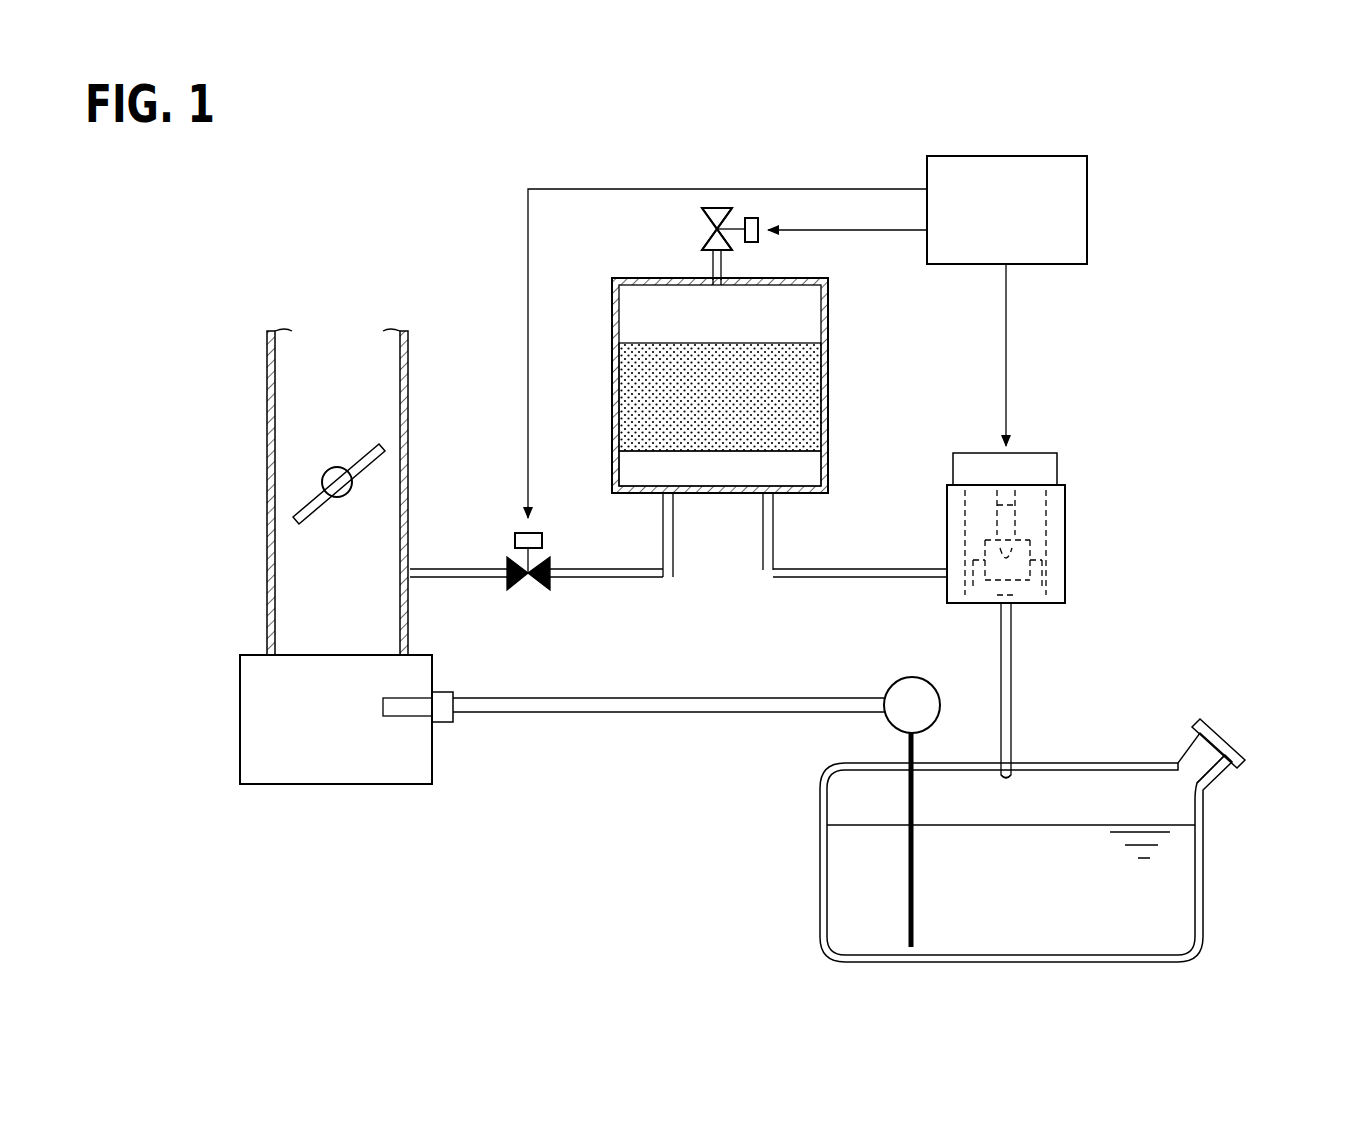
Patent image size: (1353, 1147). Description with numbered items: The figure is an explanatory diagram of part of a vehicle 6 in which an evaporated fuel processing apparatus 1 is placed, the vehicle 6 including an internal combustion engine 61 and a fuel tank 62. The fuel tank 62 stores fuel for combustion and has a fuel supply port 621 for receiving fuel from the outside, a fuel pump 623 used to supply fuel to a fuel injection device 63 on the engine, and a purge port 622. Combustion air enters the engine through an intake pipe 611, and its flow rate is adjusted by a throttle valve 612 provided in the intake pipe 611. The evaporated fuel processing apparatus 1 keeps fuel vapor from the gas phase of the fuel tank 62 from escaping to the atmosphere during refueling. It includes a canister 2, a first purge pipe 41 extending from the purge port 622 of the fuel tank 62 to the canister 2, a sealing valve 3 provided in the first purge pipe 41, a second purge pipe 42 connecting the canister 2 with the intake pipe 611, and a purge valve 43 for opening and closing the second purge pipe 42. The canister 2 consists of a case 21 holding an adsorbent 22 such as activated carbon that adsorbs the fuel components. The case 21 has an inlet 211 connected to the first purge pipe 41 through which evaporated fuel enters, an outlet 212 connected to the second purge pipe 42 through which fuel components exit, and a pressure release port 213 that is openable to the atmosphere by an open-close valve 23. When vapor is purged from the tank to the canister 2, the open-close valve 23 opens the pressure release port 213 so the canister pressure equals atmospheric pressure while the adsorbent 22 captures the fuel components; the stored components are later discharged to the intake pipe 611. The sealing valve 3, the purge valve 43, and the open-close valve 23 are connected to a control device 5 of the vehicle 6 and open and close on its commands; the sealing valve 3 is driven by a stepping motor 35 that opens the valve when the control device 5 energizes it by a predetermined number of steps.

The evaporated fuel processing apparatus 1 is at (1100, 365).
The canister 2 is at (738, 401).
The case 21 is at (832, 465).
The adsorbent 22 is at (790, 385).
The open-close valve 23 is at (718, 205).
The inlet 211 is at (785, 480).
The outlet 212 is at (660, 480).
The pressure release port 213 is at (653, 263).
The sealing valve 3 is at (1050, 525).
The stepping motor 35 is at (1030, 468).
The first purge pipe 41 is at (1010, 657).
The second purge pipe 42 is at (600, 580).
The purge valve 43 is at (541, 590).
The control device 5 is at (1063, 213).
The vehicle 6 is at (598, 818).
The internal combustion engine 61 is at (340, 750).
The intake pipe 611 is at (330, 584).
The throttle valve 612 is at (337, 482).
The fuel tank 62 is at (1070, 833).
The fuel supply port 621 is at (1225, 742).
The purge port 622 is at (1015, 770).
The fuel pump 623 is at (905, 695).
The fuel injection device 63 is at (447, 720).